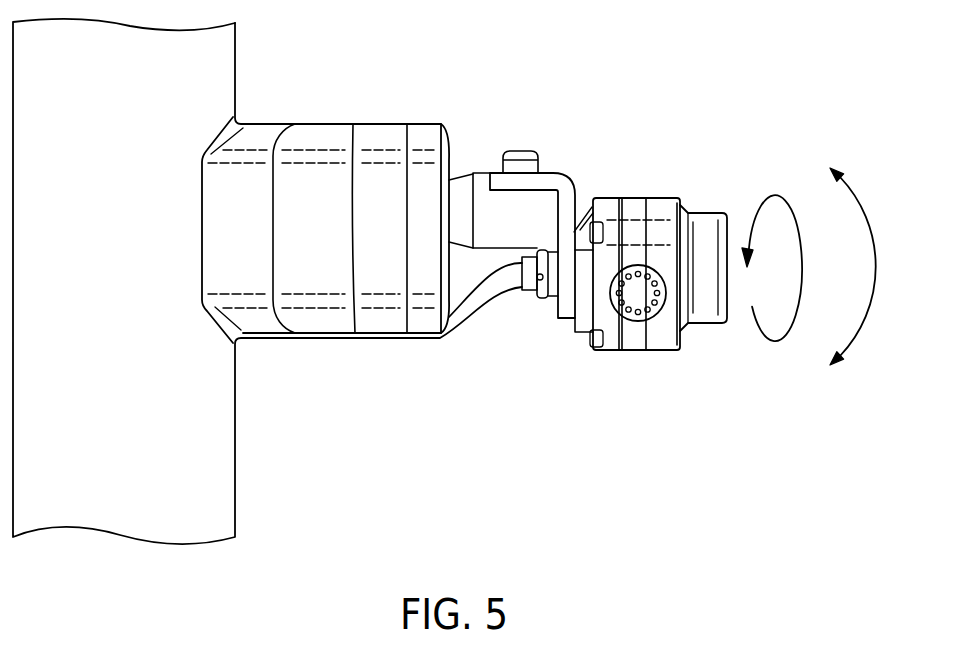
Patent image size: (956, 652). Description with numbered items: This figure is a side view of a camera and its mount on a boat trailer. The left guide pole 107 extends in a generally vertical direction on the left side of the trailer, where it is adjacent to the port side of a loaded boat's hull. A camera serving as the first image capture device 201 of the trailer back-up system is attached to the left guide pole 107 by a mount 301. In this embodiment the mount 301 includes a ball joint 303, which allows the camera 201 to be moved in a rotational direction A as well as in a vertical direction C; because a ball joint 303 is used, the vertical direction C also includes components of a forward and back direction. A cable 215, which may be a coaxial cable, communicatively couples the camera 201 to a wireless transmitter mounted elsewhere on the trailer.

The left guide pole 107 is at (215, 438).
The mount 301 is at (423, 135).
The ball joint 303 is at (467, 150).
The cable 215 is at (477, 307).
The first image capture device 201 is at (683, 315).
The rotational direction A is at (802, 268).
The vertical direction C is at (873, 268).